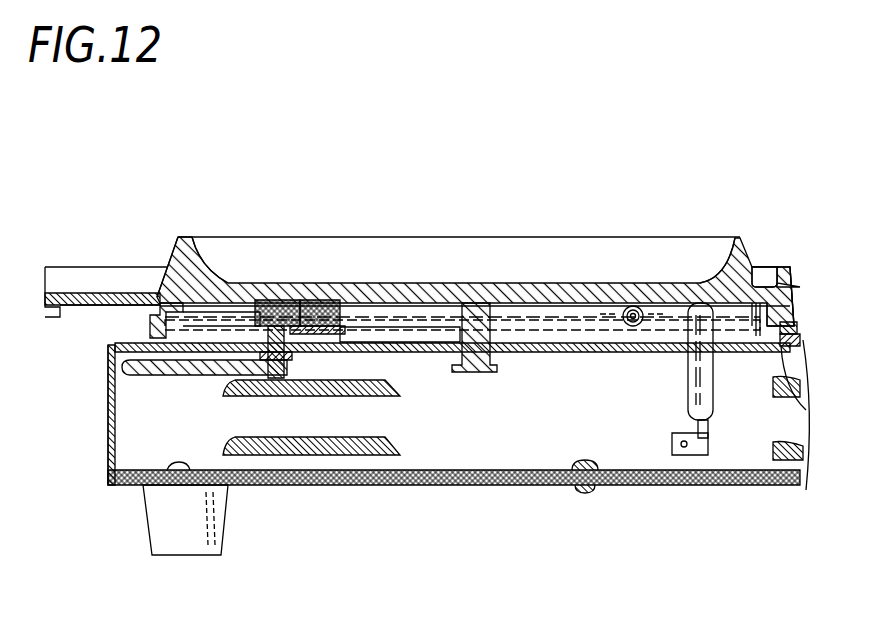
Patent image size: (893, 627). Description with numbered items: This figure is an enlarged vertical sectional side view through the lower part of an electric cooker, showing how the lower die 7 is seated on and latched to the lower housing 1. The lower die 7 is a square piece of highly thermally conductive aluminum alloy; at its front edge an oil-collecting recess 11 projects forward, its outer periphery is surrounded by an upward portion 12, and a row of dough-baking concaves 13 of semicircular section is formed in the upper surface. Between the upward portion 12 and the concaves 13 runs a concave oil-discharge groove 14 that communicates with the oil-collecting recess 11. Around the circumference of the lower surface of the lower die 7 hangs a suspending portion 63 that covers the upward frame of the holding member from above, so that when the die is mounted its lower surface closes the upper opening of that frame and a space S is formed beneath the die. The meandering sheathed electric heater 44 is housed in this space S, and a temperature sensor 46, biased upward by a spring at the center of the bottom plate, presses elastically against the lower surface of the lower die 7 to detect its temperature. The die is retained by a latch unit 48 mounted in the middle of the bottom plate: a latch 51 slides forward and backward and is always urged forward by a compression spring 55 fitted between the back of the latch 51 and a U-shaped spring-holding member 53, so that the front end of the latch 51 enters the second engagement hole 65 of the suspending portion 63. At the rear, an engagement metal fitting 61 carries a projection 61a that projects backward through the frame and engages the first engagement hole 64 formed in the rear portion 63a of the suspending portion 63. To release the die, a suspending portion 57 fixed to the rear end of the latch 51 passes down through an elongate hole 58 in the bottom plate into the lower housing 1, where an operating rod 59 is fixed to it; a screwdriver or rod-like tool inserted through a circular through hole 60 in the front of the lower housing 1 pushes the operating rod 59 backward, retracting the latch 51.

The lower housing 1 is at (481, 487).
The lower die 7 is at (418, 232).
The oil-collecting recess 11 is at (95, 293).
The upward portion 12 is at (787, 264).
The dough-baking concaves 13 is at (717, 263).
The oil-discharge groove 14 is at (768, 263).
The electric heater 44 is at (560, 315).
The temperature sensor 46 is at (475, 300).
The latch unit 48 is at (228, 305).
The latch 51 is at (155, 293).
The spring-holding member 53 is at (337, 297).
The compression spring 55 is at (283, 300).
The suspending portion 57 is at (262, 357).
The elongate hole 58 is at (293, 360).
The operating rod 59 is at (140, 362).
The through hole 60 is at (108, 372).
The engagement metal fitting 61 is at (760, 266).
The projection 61a is at (797, 325).
The suspending portion 63 is at (808, 408).
The rear portion 63a is at (800, 338).
The first engagement hole 64 is at (795, 320).
The second engagement hole 65 is at (152, 318).
The space S is at (723, 327).